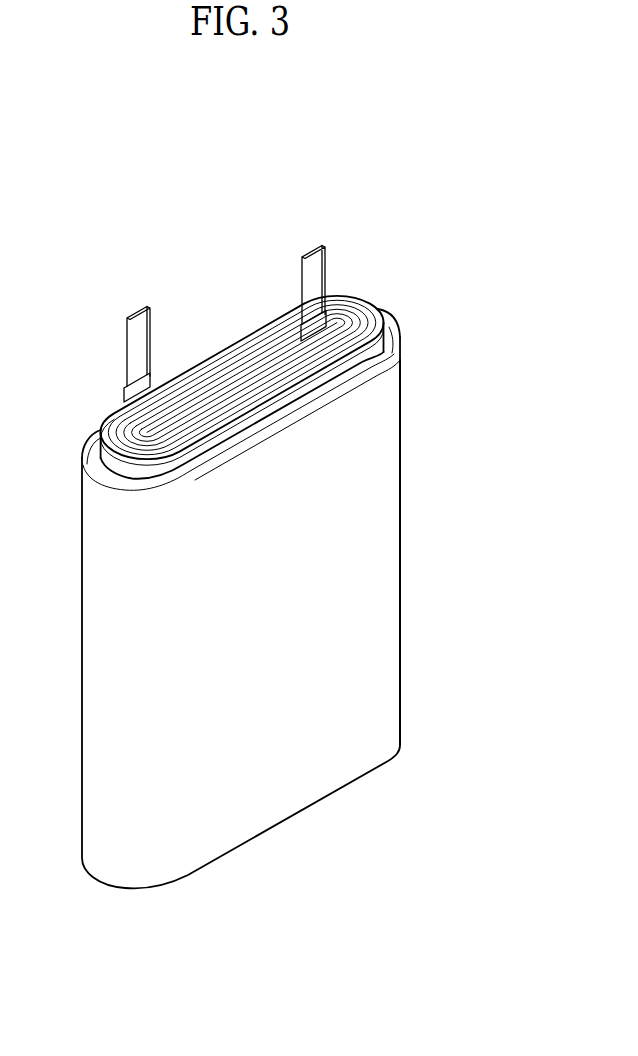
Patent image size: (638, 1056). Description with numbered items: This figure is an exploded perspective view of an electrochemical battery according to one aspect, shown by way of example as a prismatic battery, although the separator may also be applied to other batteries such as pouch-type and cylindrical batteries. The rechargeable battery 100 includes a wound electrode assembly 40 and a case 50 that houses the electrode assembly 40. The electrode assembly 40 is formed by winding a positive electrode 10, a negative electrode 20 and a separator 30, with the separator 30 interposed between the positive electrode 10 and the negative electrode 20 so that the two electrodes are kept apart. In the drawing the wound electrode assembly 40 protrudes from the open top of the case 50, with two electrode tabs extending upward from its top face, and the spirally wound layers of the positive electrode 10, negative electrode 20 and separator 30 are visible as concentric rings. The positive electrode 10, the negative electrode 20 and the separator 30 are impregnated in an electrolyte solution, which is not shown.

The rechargeable battery 100 is at (73, 199).
The positive electrode 10 is at (382, 302).
The negative electrode 20 is at (338, 292).
The separator 30 is at (370, 293).
The electrode assembly 40 is at (232, 273).
The case 50 is at (372, 564).